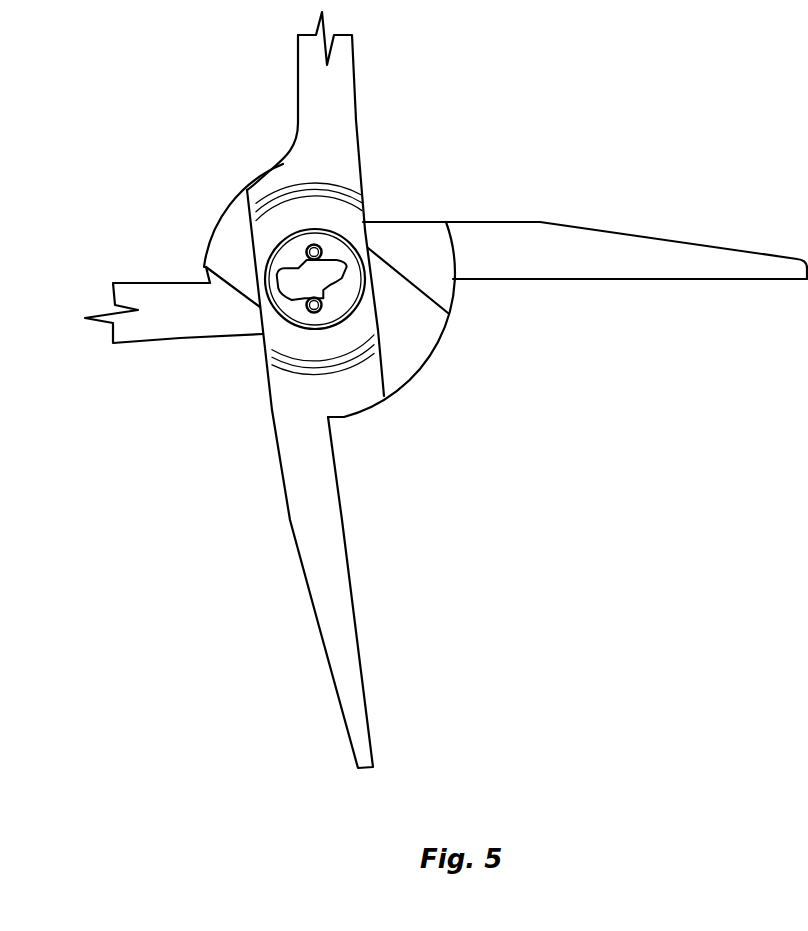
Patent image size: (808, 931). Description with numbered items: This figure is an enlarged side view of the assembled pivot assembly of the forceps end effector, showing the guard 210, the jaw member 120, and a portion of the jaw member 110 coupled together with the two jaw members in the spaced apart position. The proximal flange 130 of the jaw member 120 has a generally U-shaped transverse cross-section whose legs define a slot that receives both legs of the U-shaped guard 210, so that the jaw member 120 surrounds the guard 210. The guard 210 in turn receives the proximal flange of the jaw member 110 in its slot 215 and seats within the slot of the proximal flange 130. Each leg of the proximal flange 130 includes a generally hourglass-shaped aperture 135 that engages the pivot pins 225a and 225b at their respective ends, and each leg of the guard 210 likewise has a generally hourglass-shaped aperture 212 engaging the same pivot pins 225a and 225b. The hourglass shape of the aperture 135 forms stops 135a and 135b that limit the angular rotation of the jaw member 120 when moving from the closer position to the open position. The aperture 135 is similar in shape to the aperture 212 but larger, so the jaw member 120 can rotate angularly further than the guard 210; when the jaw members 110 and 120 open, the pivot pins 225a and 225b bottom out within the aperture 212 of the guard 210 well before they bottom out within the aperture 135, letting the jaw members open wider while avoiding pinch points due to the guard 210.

The jaw member 110 is at (615, 270).
The jaw member 120 is at (325, 604).
The proximal flange 130 is at (266, 228).
The aperture 135 is at (297, 303).
The stop 135a is at (332, 308).
The stop 135b is at (306, 253).
The guard 210 is at (402, 372).
The aperture 212 is at (323, 282).
The slot 215 is at (223, 243).
The pivot pin 225a is at (316, 312).
The pivot pin 225b is at (320, 251).